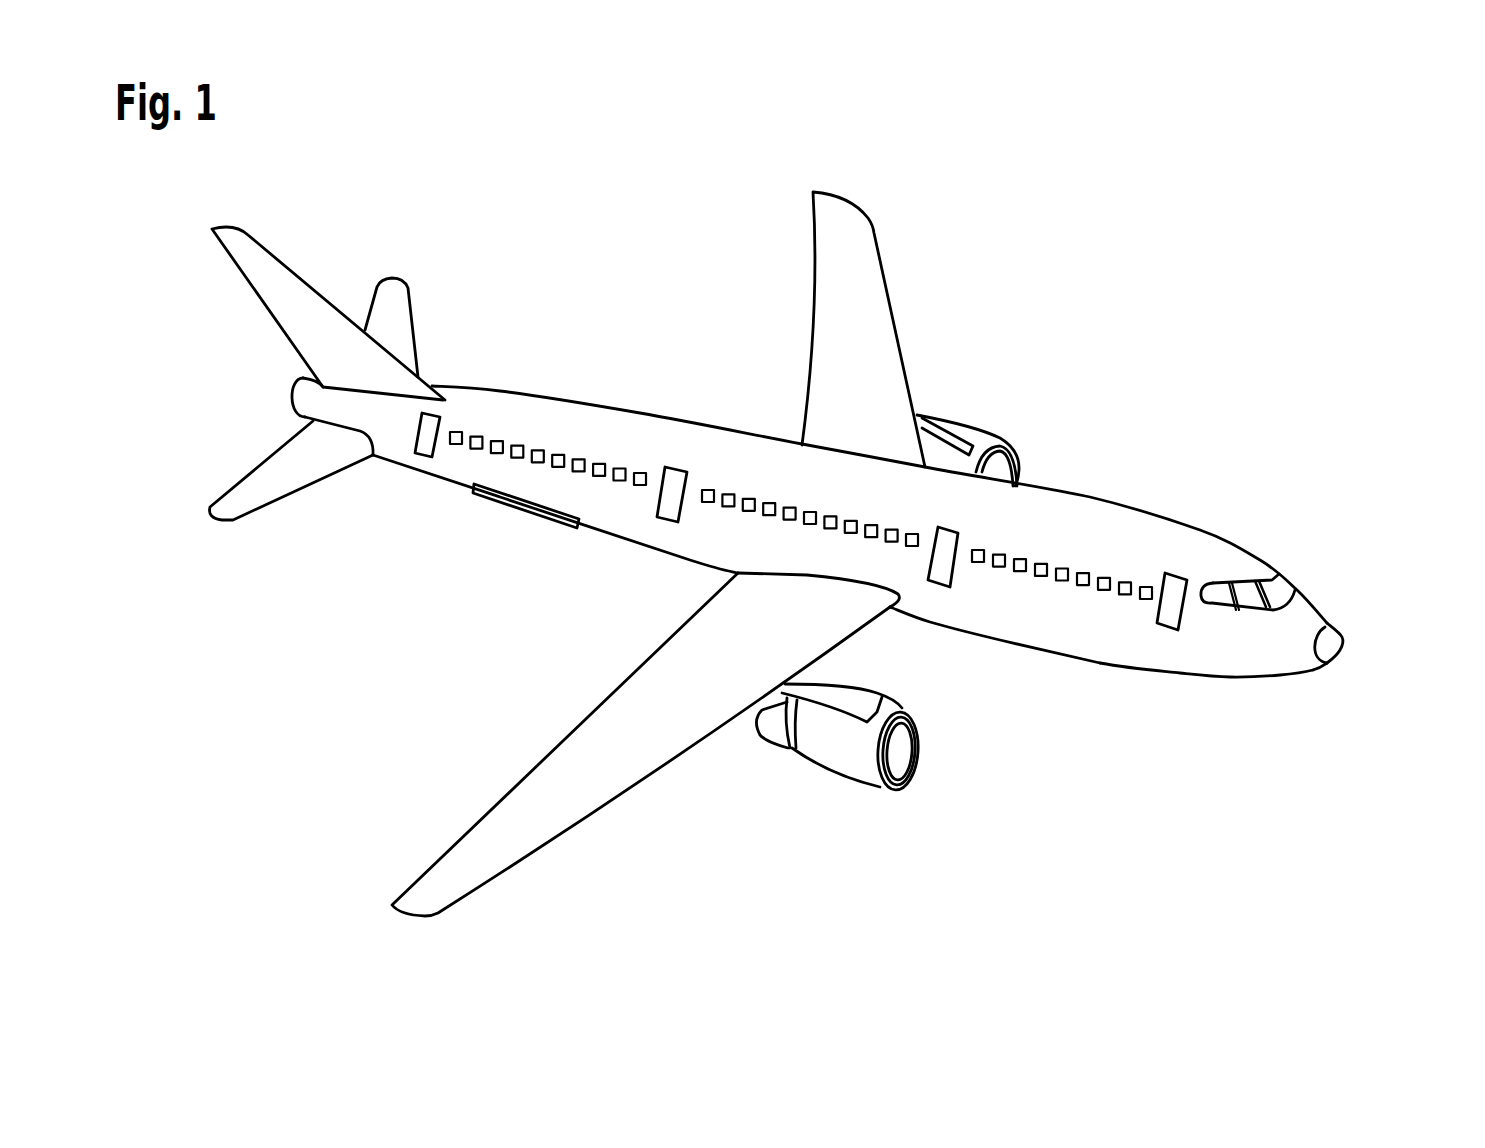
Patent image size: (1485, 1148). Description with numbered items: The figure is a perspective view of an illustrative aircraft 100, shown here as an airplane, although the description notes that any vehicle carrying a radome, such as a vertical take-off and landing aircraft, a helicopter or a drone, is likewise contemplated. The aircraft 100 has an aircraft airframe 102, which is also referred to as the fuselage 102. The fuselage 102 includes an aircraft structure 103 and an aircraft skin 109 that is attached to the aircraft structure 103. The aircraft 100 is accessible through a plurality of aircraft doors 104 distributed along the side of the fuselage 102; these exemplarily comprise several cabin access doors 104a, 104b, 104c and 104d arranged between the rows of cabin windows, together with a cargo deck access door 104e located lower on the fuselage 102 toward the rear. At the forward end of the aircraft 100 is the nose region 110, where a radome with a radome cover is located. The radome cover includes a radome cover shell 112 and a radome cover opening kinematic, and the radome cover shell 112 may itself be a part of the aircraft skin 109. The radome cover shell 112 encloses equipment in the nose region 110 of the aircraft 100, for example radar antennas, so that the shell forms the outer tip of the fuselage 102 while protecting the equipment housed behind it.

The aircraft 100 is at (1204, 380).
The aircraft airframe 102 is at (580, 433).
The aircraft structure 103 is at (1105, 669).
The aircraft doors 104 is at (1197, 641).
The cabin access door 104a is at (427, 425).
The cabin access door 104b is at (673, 483).
The cabin access door 104c is at (945, 535).
The cabin access door 104d is at (1170, 587).
The cargo deck access door 104e is at (548, 528).
The aircraft skin 109 is at (1007, 647).
The nose region 110 is at (1331, 614).
The radome cover shell 112 is at (1330, 640).